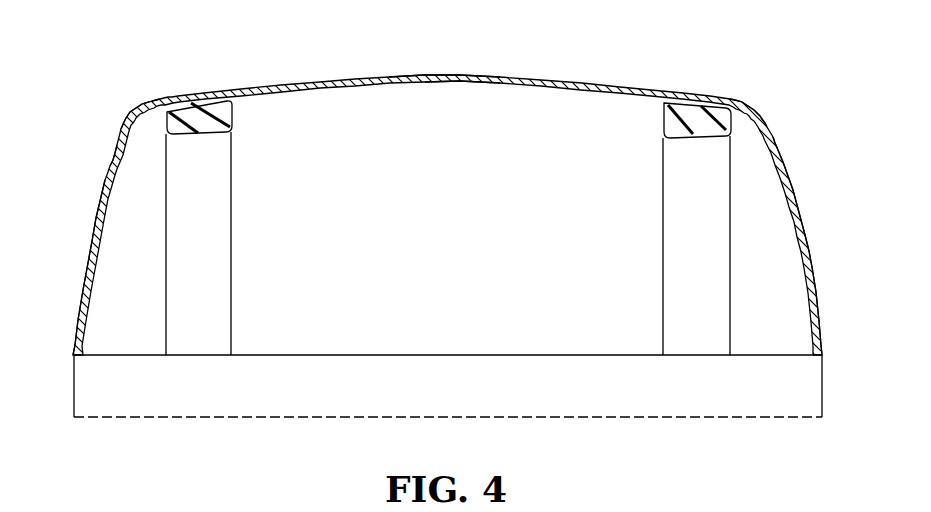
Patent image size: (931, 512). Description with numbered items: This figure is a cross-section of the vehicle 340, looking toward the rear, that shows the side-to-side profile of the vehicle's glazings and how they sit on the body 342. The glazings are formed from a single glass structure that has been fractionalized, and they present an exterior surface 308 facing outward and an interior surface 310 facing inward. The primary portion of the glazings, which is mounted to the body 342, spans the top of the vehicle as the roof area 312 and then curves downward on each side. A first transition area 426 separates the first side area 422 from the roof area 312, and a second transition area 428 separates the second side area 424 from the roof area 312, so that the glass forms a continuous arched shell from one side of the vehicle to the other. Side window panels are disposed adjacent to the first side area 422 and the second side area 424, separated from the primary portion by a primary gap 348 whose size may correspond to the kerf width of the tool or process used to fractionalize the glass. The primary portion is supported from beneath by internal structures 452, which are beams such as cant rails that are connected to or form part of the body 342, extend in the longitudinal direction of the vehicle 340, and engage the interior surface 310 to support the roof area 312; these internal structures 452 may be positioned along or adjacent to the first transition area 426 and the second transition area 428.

The vehicle 340 is at (140, 46).
The exterior surface 308 is at (637, 83).
The interior surface 310 is at (530, 84).
The roof area 312 is at (438, 73).
The body 342 is at (185, 418).
The primary gap 348 is at (117, 153).
The first side area 422 is at (94, 225).
The second side area 424 is at (797, 205).
The first transition area 426 is at (137, 108).
The second transition area 428 is at (752, 110).
The internal structures 452 is at (233, 109).